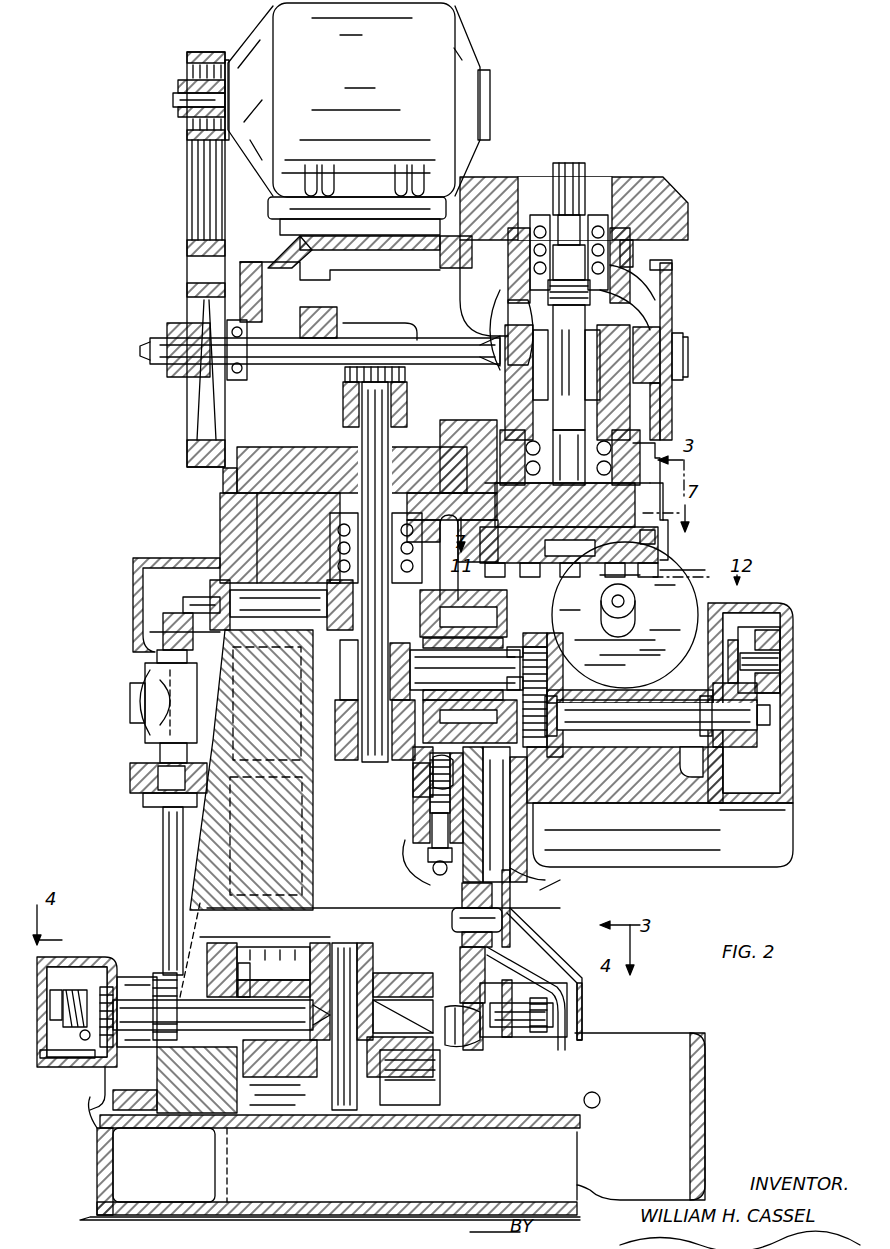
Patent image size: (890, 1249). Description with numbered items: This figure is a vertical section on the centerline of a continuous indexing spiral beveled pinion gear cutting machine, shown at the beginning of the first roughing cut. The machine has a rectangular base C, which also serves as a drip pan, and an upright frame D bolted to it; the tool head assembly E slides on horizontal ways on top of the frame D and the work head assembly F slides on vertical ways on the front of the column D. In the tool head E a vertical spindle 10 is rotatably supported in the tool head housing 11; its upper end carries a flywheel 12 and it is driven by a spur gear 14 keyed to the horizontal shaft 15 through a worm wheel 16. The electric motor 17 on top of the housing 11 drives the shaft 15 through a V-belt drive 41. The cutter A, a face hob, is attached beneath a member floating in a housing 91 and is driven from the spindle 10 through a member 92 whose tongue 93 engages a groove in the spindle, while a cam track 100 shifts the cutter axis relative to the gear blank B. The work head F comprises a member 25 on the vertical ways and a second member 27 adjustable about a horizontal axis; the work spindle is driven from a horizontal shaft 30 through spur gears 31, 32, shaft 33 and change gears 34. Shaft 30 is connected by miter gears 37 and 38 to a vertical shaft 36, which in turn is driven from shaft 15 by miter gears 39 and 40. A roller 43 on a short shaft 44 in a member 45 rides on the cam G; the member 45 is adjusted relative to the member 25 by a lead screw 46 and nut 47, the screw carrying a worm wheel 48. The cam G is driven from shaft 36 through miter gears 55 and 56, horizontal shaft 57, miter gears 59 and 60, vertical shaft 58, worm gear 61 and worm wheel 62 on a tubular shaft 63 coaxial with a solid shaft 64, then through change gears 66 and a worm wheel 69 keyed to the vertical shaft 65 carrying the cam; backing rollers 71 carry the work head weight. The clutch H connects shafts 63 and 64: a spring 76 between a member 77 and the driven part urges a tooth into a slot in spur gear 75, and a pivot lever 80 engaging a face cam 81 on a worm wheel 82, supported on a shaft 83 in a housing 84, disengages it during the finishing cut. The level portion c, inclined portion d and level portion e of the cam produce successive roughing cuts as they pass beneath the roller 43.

The vertical spindle 10 is at (586, 176).
The tool head housing 11 is at (262, 258).
The flywheel 12 is at (690, 195).
The spur gear 14 is at (510, 302).
The horizontal shaft 15 is at (418, 346).
The worm wheel 16 is at (672, 318).
The electric motor 17 is at (490, 92).
The member 25 is at (534, 907).
The second member 27 is at (545, 800).
The horizontal shaft 30 is at (417, 748).
The spur gear 31 is at (600, 598).
The spur gear 32 is at (605, 628).
The shaft 33 is at (668, 732).
The change gears 34 is at (775, 690).
The vertical shaft 36 is at (360, 665).
The miter gear 37 is at (420, 630).
The miter gear 38 is at (345, 715).
The miter gear 39 is at (392, 397).
The miter gear 40 is at (395, 336).
The V-belt drive 41 is at (185, 205).
The roller 43 is at (496, 960).
The short shaft 44 is at (502, 915).
The member 45 is at (570, 877).
The lead screw 46 is at (412, 825).
The nut 47 is at (428, 798).
The worm wheel 48 is at (425, 878).
The miter gear 55 is at (420, 585).
The miter gear 56 is at (360, 650).
The horizontal shaft 57 is at (232, 538).
The vertical shaft 58 is at (165, 830).
The miter gear 59 is at (185, 580).
The miter gear 60 is at (137, 650).
The worm gear 61 is at (160, 965).
The worm wheel 62 is at (195, 1017).
The horizontal tubular shaft 63 is at (150, 975).
The solid shaft 64 is at (235, 950).
The vertical shaft 65 is at (373, 972).
The change gears 66 is at (580, 1060).
The worm wheel 69 is at (420, 1105).
The backing rollers 71 is at (458, 1048).
The spur gear 75 is at (107, 1004).
The compression spring 76 is at (79, 994).
The member 77 is at (59, 990).
The pivot lever 80 is at (137, 1012).
The horizontal face cam 81 is at (70, 1024).
The worm wheel 82 is at (45, 1060).
The shaft 83 is at (70, 1062).
The housing 84 is at (70, 955).
The housing 91 is at (640, 522).
The member 92 is at (612, 530).
The tongue 93 is at (570, 457).
The cam track 100 is at (668, 540).
The face-type tool A is at (689, 559).
The gear blank B is at (645, 648).
The rectangular base C is at (707, 1060).
The upright frame D is at (315, 840).
The tool head assembly E is at (675, 282).
The work head assembly F is at (690, 862).
The rotatable cam G is at (326, 935).
The clutch H is at (85, 1097).
The level portion c is at (429, 925).
The inclined portion d is at (403, 921).
The level portion e is at (377, 918).